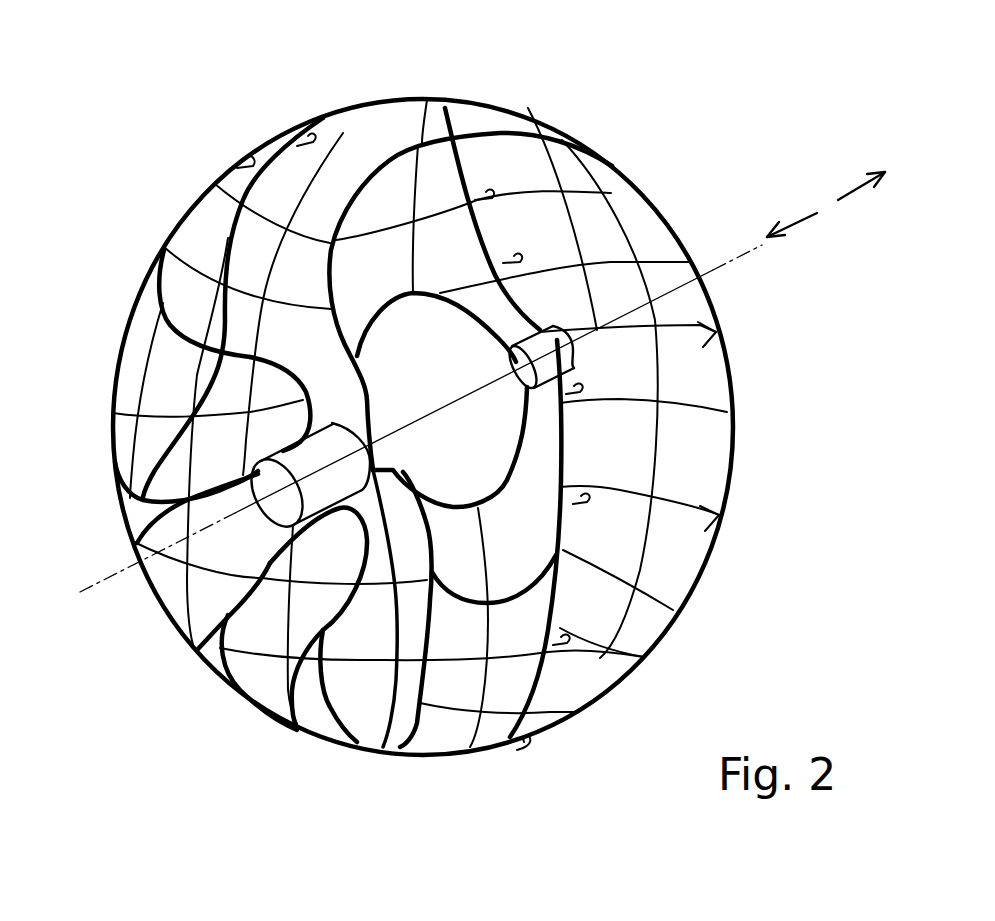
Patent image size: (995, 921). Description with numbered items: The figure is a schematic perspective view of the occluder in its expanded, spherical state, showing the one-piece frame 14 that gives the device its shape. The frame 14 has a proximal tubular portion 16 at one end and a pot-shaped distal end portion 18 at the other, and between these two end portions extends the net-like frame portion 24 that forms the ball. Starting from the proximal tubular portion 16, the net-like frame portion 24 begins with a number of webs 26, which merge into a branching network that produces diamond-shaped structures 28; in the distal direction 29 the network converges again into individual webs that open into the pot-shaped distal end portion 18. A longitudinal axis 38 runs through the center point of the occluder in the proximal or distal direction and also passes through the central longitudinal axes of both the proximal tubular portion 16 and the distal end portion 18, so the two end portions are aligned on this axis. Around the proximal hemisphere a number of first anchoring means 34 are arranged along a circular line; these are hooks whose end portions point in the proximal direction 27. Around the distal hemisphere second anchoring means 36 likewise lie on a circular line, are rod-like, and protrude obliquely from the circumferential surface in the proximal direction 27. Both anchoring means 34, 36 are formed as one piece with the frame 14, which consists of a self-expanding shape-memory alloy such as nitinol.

The frame 14 is at (340, 116).
The proximal tubular portion 16 is at (268, 503).
The pot-shaped distal end portion 18 is at (556, 333).
The net-like frame portion 24 is at (430, 148).
The webs 26 is at (297, 378).
The proximal direction 27 is at (805, 220).
The diamond-shaped structures 28 is at (163, 311).
The distal direction 29 is at (852, 190).
The first anchoring means 34 is at (250, 162).
The second anchoring means 36 is at (723, 373).
The longitudinal axis 38 is at (713, 268).